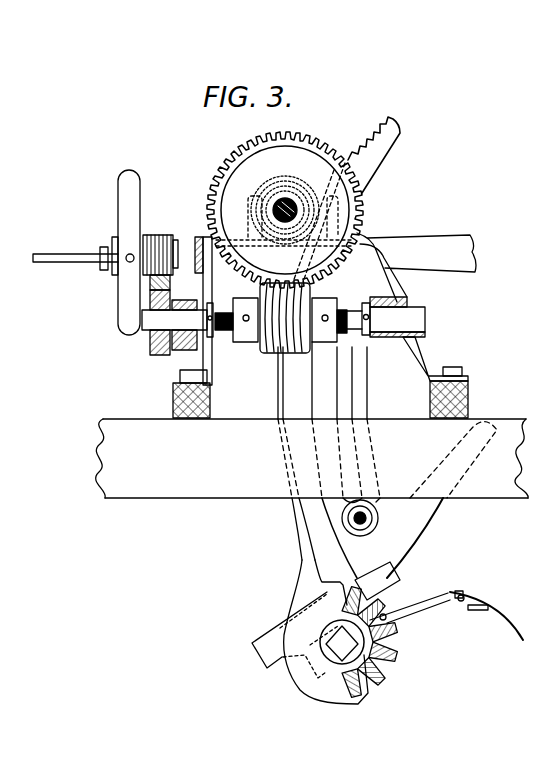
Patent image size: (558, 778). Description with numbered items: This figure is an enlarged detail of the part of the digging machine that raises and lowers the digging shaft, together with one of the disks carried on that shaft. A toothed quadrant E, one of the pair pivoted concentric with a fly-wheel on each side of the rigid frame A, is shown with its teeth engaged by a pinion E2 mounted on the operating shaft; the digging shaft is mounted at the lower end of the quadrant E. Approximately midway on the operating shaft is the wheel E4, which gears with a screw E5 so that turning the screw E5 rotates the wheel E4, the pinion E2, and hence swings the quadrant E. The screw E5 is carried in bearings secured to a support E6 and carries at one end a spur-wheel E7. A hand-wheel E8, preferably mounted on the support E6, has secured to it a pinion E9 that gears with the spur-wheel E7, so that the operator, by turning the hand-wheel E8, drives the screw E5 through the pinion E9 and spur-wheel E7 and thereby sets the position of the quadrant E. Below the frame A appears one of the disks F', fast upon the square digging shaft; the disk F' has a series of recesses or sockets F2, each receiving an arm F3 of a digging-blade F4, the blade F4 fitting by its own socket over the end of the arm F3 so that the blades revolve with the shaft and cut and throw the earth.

The toothed quadrant E is at (272, 210).
The pinion E2 is at (298, 183).
The wheel E4 is at (227, 170).
The screw E5 is at (264, 350).
The support E6 is at (427, 352).
The spur-wheel E7 is at (153, 350).
The hand-wheel E8 is at (125, 205).
The pinion E9 is at (143, 268).
The rigid frame A is at (312, 480).
The disk F' is at (399, 642).
The recess or socket F2 is at (395, 662).
The arm F3 is at (430, 602).
The digging-blade F4 is at (503, 610).